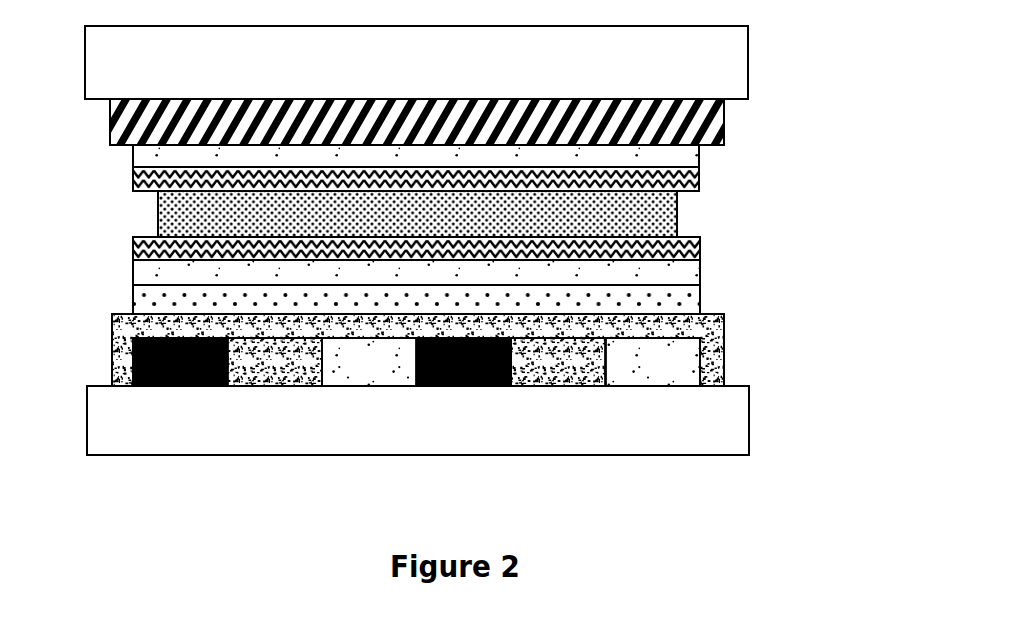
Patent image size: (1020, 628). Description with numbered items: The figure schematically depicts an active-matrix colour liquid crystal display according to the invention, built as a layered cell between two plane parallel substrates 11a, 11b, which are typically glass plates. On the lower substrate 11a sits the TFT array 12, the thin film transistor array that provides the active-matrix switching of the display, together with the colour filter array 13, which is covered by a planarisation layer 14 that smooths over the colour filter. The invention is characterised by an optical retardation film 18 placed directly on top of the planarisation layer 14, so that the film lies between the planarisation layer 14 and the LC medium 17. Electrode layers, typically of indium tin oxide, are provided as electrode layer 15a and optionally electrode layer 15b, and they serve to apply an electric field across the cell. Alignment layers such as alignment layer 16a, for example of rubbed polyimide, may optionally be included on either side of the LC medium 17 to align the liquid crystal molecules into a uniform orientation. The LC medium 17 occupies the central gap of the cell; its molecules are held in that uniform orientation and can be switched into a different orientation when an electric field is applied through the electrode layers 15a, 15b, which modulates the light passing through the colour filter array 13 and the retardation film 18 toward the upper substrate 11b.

The substrate 11a is at (749, 425).
The substrate 11b is at (748, 70).
The TFT array 12 is at (724, 125).
The colour filter array 13 is at (692, 358).
The planarisation layer 14 is at (717, 323).
The electrode layer 15a is at (700, 266).
The electrode layer 15b is at (699, 162).
The alignment layer 16a is at (699, 184).
The LC medium 17 is at (677, 218).
The optical retardation film 18 is at (700, 297).